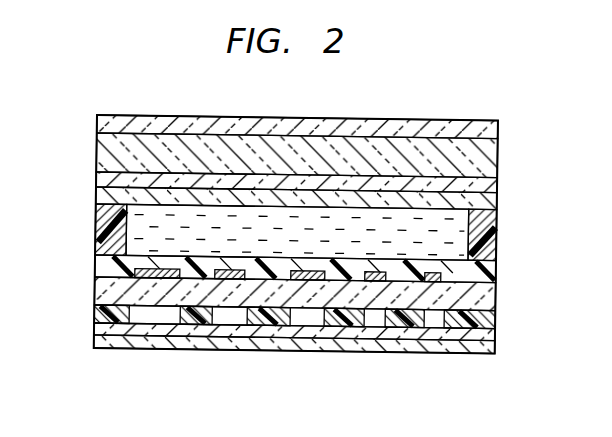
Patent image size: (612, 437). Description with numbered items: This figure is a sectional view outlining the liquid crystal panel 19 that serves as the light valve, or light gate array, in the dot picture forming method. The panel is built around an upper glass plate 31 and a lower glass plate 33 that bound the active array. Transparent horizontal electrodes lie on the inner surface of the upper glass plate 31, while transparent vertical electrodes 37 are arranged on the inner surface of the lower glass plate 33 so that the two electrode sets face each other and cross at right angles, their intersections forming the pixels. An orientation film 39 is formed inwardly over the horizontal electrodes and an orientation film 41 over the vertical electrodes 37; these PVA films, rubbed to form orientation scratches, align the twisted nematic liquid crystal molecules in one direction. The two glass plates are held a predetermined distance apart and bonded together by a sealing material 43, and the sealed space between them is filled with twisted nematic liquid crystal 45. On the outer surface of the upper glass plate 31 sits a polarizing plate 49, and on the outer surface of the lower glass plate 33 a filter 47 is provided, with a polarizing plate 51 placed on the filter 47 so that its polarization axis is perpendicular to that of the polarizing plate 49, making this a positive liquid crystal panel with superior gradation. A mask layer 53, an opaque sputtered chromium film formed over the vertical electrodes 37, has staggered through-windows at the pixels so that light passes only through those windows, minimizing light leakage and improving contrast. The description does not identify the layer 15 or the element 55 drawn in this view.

The liquid crystal panel 19 is at (293, 352).
The polarizing plate 49 is at (500, 124).
The upper glass plate 31 is at (495, 156).
The upper substrate 15 is at (498, 181).
The orientation film 39 is at (490, 198).
The twisted nematic liquid crystal 45 is at (326, 222).
The sealing material 43 is at (107, 233).
The orientation film 41 is at (490, 273).
The vertical electrodes 37 is at (112, 266).
The lower glass plate 33 is at (487, 296).
The light transmitting window 55 is at (160, 315).
The mask layer 53 is at (102, 315).
The filter 47 is at (490, 336).
The polarizing plate 51 is at (493, 349).